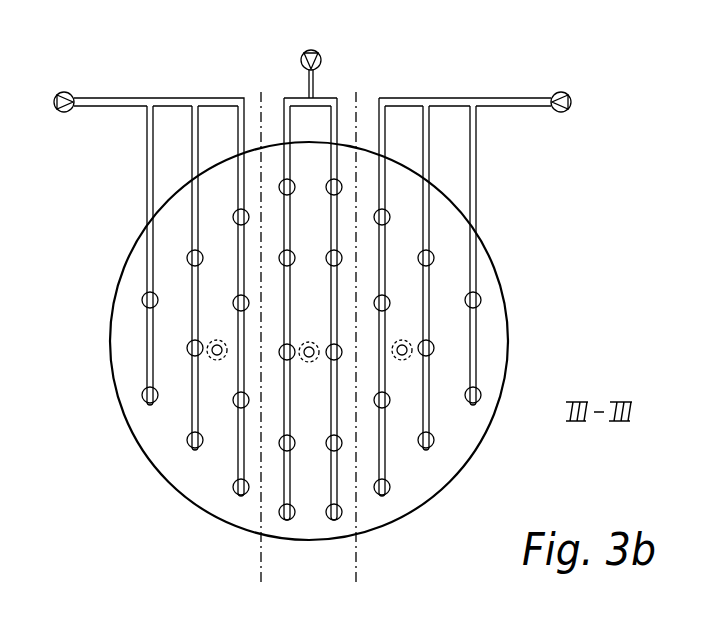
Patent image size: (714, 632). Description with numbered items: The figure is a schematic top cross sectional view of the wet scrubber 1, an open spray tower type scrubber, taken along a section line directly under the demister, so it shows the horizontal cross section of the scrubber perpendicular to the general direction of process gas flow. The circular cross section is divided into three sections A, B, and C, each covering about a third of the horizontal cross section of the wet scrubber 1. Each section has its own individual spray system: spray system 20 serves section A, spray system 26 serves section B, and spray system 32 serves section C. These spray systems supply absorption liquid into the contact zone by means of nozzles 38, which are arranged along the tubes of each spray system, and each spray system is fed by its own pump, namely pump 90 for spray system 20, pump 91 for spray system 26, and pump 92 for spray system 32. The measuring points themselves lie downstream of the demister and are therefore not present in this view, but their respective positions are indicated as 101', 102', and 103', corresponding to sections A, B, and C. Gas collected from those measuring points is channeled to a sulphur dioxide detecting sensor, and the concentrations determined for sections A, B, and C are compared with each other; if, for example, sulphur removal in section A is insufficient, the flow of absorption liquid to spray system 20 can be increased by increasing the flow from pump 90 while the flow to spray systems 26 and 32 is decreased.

The wet scrubber 1 is at (78, 322).
The spray system 20 is at (208, 98).
The spray system 26 is at (324, 98).
The spray system 32 is at (455, 98).
The nozzles 38 is at (478, 300).
The pump 90 is at (58, 95).
The pump 91 is at (322, 62).
The pump 92 is at (558, 92).
The position of measuring point 101' is at (133, 414).
The position of measuring point 102' is at (292, 471).
The position of measuring point 103' is at (466, 417).
The section A is at (165, 492).
The section B is at (318, 550).
The section C is at (430, 513).